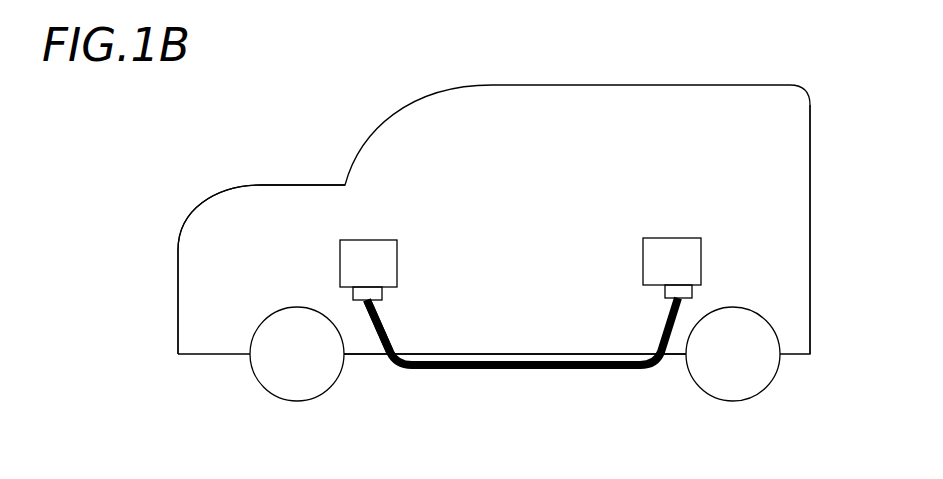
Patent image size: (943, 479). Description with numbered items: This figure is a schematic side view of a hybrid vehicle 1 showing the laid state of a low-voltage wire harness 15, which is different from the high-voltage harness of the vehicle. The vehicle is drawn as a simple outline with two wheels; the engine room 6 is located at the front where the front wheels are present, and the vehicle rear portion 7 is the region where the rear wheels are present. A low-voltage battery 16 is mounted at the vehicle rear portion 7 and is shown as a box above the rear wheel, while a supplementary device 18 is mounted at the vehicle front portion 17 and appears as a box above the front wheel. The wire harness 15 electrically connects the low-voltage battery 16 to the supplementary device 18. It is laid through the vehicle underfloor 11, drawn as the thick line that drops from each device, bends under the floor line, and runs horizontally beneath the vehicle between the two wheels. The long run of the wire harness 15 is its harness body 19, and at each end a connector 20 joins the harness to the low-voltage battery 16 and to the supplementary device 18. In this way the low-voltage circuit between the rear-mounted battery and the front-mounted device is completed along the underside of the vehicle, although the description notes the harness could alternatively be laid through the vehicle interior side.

The hybrid vehicle 1 is at (651, 84).
The engine room 6 is at (194, 331).
The vehicle rear portion 7 is at (795, 320).
The vehicle underfloor 11 is at (600, 355).
The wire harness 15 is at (428, 373).
The low-voltage battery 16 is at (680, 246).
The vehicle front portion 17 is at (320, 198).
The supplementary device 18 is at (382, 247).
The harness body 19 is at (394, 334).
The connector 20 is at (355, 293).